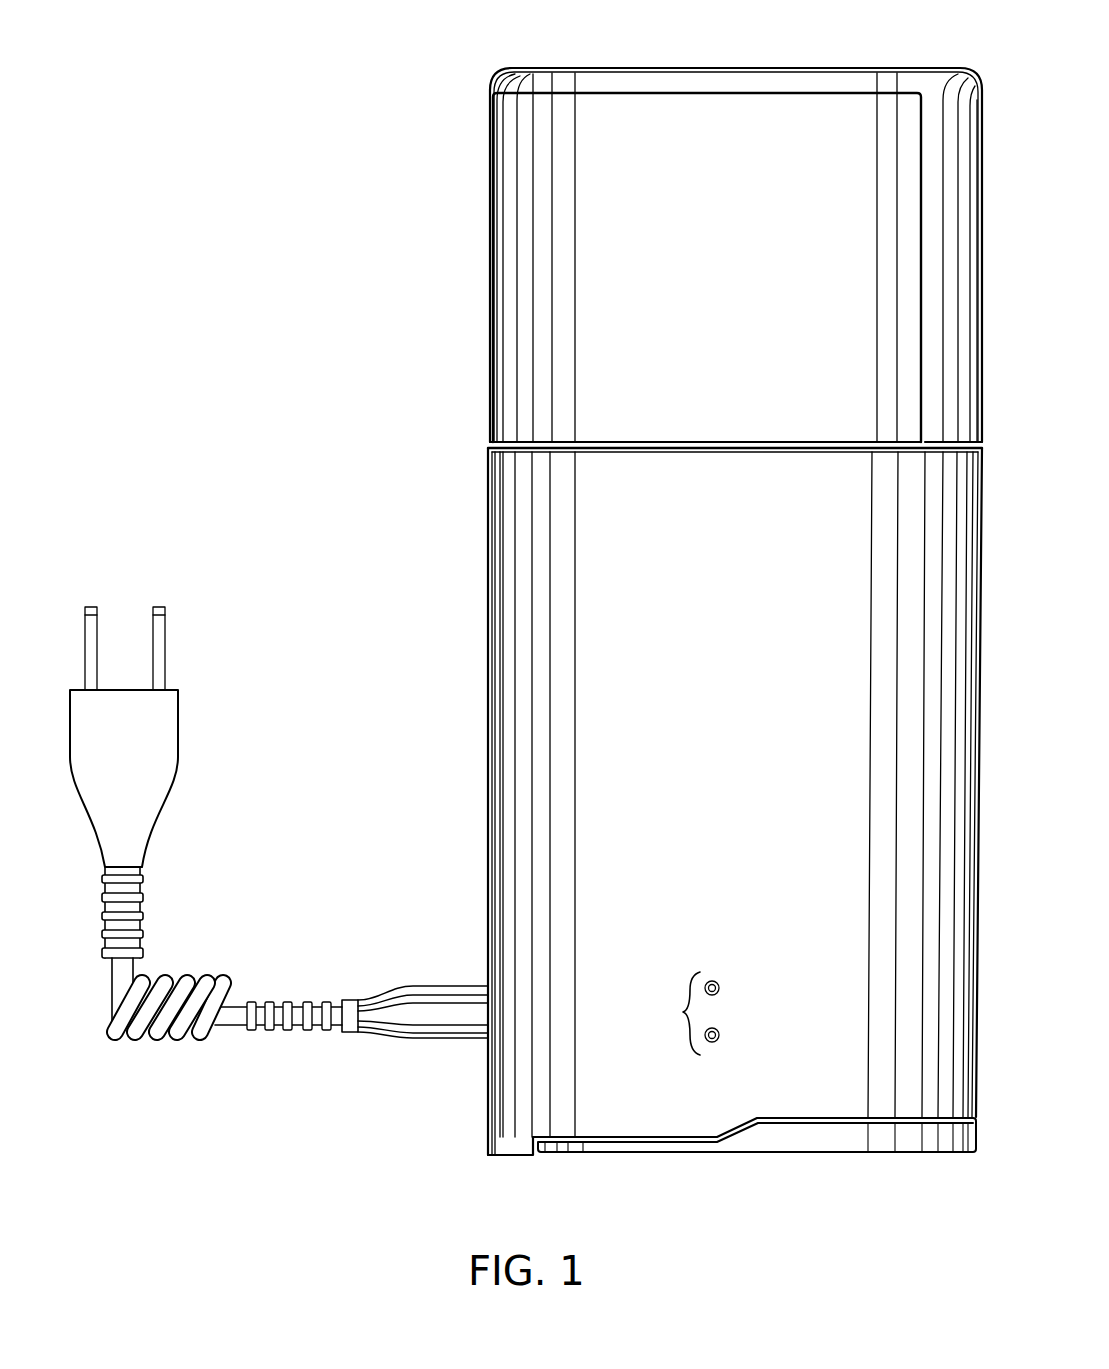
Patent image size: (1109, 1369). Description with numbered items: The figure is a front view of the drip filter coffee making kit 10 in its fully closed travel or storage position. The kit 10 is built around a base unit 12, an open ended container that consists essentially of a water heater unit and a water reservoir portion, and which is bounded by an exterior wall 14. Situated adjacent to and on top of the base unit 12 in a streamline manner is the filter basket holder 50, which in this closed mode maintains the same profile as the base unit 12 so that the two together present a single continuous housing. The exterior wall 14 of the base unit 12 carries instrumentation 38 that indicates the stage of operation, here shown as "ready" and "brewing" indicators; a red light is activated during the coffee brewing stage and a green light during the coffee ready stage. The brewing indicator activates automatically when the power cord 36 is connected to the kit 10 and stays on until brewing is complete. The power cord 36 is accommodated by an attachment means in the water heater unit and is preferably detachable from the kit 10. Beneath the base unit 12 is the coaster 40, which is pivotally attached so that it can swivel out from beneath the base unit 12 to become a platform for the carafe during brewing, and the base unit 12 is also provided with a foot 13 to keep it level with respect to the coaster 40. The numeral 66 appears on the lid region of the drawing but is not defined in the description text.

The drip filter coffee making kit 10 is at (478, 248).
The base unit 12 is at (479, 684).
The foot 13 is at (522, 1155).
The exterior wall 14 is at (488, 788).
The power cord 36 is at (308, 1000).
The instrumentation 38 is at (682, 1013).
The coaster 40 is at (943, 1145).
The filter basket holder 50 is at (693, 230).
The lid front panel 66 is at (603, 400).